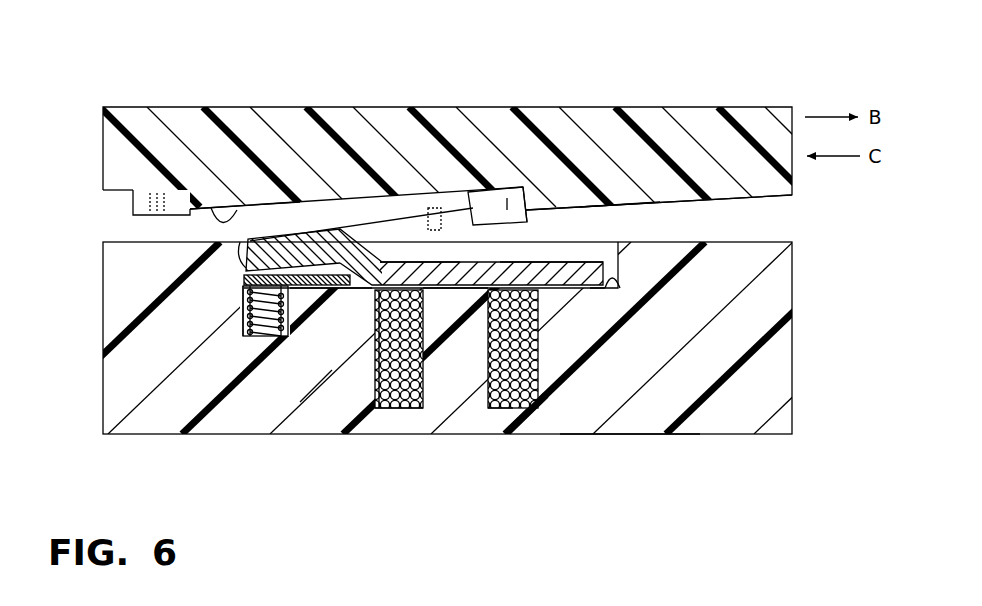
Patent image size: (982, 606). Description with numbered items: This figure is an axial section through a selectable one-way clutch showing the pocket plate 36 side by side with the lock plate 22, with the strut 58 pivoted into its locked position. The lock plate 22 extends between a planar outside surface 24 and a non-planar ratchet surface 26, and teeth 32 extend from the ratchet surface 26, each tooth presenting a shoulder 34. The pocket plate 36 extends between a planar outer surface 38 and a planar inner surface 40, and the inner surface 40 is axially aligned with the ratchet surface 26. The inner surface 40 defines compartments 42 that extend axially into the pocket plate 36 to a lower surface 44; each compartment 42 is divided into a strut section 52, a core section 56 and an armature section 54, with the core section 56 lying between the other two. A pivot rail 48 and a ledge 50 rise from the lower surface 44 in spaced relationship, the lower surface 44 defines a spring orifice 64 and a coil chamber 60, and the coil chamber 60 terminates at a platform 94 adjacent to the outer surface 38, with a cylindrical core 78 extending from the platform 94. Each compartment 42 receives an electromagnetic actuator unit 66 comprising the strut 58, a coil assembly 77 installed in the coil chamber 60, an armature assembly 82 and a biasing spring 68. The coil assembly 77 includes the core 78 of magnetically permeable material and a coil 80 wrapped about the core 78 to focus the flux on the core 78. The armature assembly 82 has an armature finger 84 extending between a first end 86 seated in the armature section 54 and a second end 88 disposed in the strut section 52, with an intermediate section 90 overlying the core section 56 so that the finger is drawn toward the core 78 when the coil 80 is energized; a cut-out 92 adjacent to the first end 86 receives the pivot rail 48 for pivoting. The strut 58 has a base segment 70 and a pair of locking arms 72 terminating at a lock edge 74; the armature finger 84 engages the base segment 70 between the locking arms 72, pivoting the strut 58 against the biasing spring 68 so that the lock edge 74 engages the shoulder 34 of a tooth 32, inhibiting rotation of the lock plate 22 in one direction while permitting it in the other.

The lock plate 22 is at (257, 104).
The outside surface 24 is at (556, 206).
The ratchet surface 26 is at (613, 204).
The teeth 32 is at (211, 207).
The shoulder 34 is at (190, 215).
The pocket plate 36 is at (797, 359).
The outer surface 38 is at (613, 435).
The inner surface 40 is at (706, 242).
The compartments 42 is at (322, 392).
The lower surface 44 is at (440, 288).
The pivot rail 48 is at (573, 273).
The ledge 50 is at (357, 293).
The strut section 52 is at (318, 290).
The armature section 54 is at (619, 291).
The core section 56 is at (423, 258).
The strut 58 is at (253, 238).
The coil chamber 60 is at (387, 409).
The spring orifice 64 is at (245, 292).
The electromagnetic actuator unit 66 is at (243, 279).
The biasing spring 68 is at (265, 336).
The base segment 70 is at (243, 300).
The locking arms 72 is at (437, 208).
The lock edge 74 is at (507, 198).
The coil assembly 77 is at (545, 413).
The core 78 is at (468, 378).
The coil 80 is at (412, 409).
The armature assembly 82 is at (551, 252).
The armature finger 84 is at (529, 208).
The first end 86 is at (614, 277).
The second end 88 is at (210, 207).
The intermediate section 90 is at (368, 206).
The cut-out 92 is at (582, 287).
The platform 94 is at (497, 409).